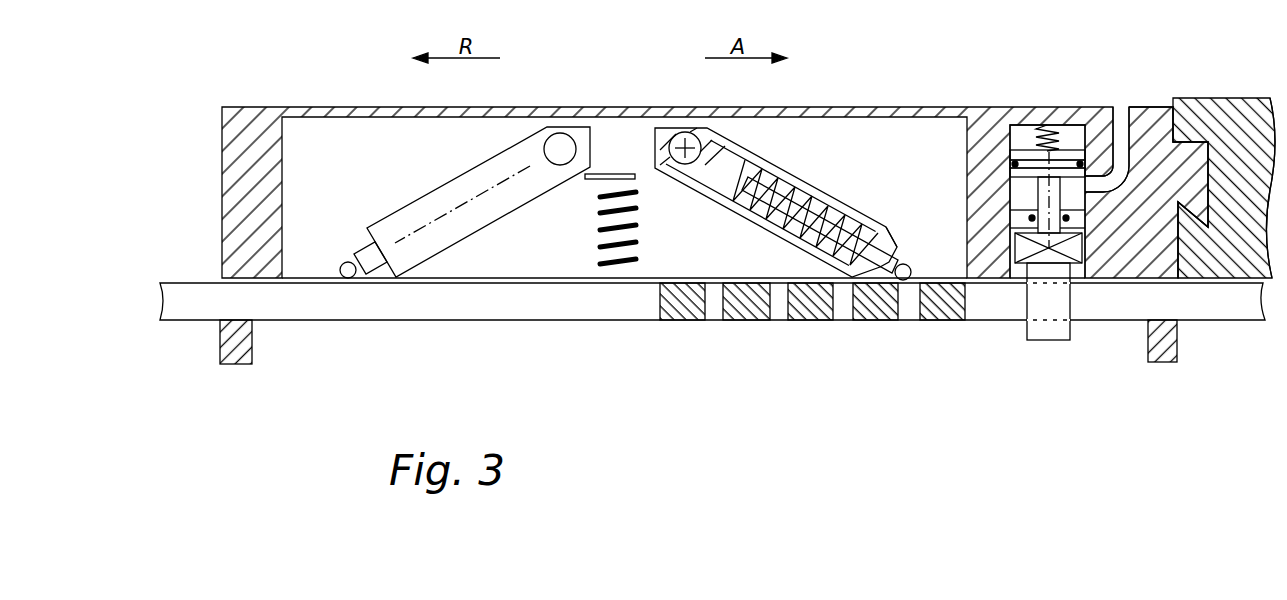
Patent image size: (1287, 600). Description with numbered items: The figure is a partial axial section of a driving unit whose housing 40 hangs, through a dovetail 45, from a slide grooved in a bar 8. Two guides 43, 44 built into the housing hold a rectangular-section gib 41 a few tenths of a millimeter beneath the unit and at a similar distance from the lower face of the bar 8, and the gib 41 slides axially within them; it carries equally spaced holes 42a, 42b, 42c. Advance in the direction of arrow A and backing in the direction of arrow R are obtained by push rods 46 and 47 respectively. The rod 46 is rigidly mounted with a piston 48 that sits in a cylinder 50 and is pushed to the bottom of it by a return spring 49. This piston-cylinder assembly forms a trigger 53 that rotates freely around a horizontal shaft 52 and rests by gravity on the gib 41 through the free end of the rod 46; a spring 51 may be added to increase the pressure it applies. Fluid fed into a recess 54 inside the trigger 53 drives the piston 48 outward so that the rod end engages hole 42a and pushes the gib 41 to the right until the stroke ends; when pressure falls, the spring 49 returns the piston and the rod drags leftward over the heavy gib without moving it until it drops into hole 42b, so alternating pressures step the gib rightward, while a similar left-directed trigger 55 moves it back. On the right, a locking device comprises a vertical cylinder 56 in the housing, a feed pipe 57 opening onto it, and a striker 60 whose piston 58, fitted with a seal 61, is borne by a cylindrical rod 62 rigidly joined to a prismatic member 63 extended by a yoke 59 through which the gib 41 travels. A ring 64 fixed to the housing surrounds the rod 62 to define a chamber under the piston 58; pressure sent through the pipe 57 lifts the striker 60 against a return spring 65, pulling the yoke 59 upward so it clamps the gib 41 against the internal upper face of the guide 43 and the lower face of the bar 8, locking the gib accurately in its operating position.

The bar 8 is at (1262, 227).
The housing 40 is at (641, 98).
The gib 41 is at (178, 292).
The hole 42a is at (910, 307).
The hole 42b is at (842, 307).
The hole 42c is at (778, 307).
The guide 43 is at (232, 364).
The guide 44 is at (1175, 358).
The dovetail 45 is at (1193, 157).
The push rod 46 is at (903, 262).
The push rod 47 is at (343, 266).
The piston 48 is at (758, 163).
The return spring 49 is at (770, 212).
The cylinder 50 is at (812, 190).
The spring 51 is at (608, 243).
The horizontal shaft 52 is at (691, 142).
The trigger 53 is at (878, 203).
The recess 54 is at (687, 162).
The trigger 55 is at (558, 153).
The vertical cylinder 56 is at (1008, 188).
The feed pipe 57 is at (1137, 150).
The piston 58 is at (1068, 162).
The yoke 59 is at (1062, 334).
The striker 60 is at (1028, 352).
The seal 61 is at (986, 165).
The cylindrical rod 62 is at (1099, 180).
The prismatic member 63 is at (1075, 248).
The ring 64 is at (1028, 217).
The return spring 65 is at (1043, 124).